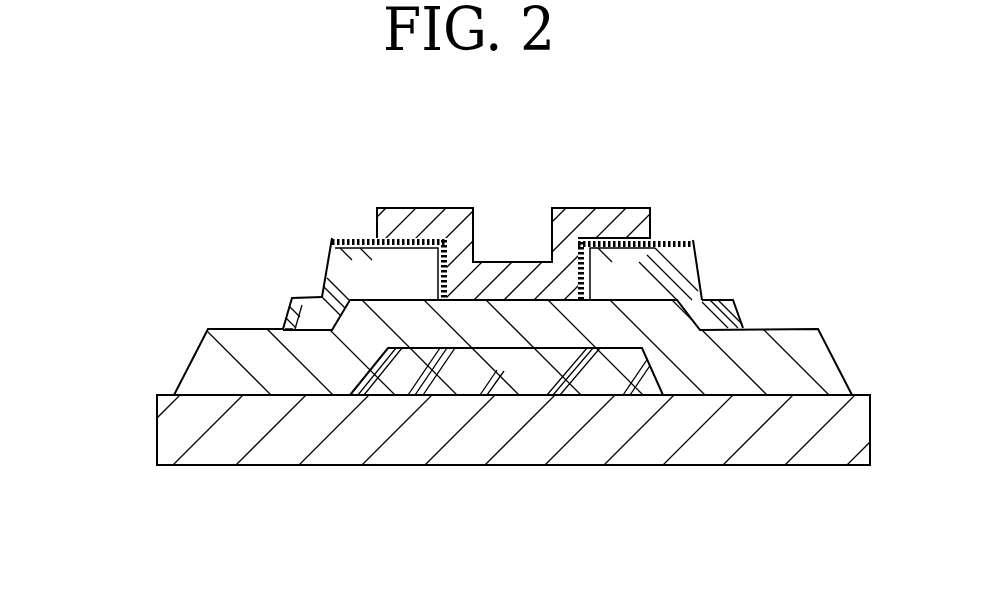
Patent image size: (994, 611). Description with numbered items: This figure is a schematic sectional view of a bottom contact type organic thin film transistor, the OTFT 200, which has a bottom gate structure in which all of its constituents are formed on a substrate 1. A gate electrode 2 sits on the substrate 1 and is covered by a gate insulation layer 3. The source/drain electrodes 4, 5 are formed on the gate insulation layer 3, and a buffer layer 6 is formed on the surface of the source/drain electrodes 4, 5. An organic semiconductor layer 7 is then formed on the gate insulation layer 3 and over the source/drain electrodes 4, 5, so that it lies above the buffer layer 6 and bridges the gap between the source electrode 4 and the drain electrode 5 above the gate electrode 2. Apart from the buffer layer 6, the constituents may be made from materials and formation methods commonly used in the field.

The OTFT 200 is at (150, 252).
The substrate 1 is at (657, 453).
The gate electrode 2 is at (443, 380).
The gate insulation layer 3 is at (791, 342).
The source electrode 4 is at (333, 263).
The drain electrode 5 is at (694, 266).
The buffer layer 6 is at (688, 238).
The organic semiconductor layer 7 is at (632, 214).